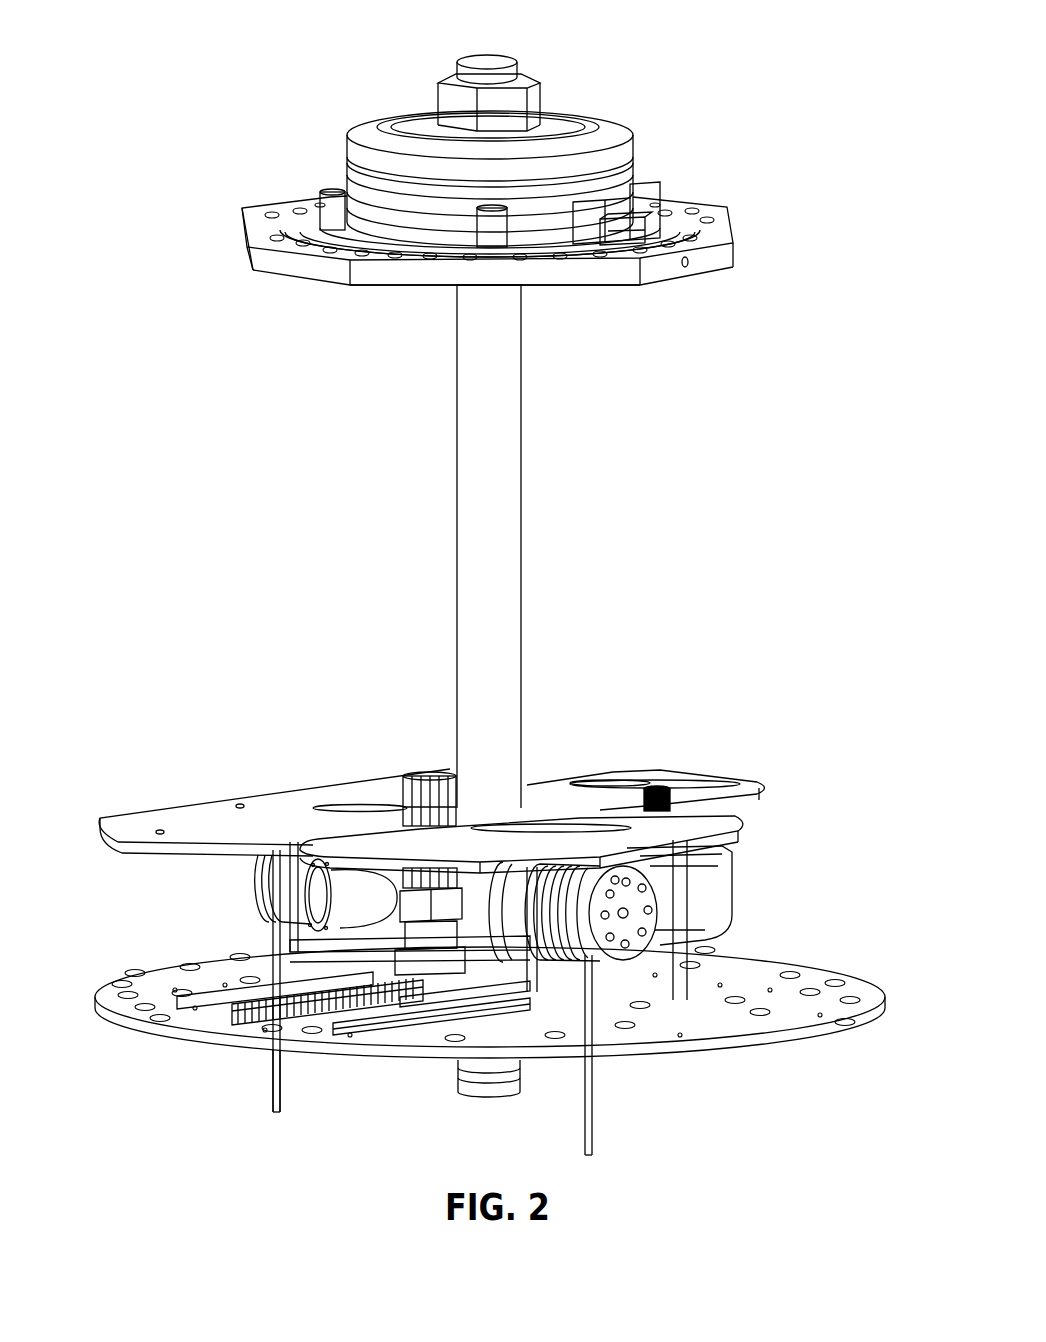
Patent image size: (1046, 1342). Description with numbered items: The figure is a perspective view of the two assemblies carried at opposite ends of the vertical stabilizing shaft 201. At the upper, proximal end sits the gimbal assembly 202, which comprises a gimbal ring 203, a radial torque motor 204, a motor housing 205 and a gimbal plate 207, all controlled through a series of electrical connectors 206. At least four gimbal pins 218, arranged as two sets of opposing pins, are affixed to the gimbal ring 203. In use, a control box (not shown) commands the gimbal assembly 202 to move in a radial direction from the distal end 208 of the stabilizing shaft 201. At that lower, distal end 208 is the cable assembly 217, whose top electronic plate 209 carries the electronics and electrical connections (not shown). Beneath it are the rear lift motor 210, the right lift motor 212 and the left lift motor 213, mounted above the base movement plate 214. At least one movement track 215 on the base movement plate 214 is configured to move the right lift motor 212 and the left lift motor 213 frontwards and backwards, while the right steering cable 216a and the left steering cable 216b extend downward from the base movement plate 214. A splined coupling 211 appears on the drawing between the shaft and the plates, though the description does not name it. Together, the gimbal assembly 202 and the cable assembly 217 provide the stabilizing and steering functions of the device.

The stabilizing shaft 201 is at (453, 480).
The gimbal assembly 202 is at (430, 46).
The gimbal ring 203 is at (287, 226).
The radial torque motor 204 is at (630, 162).
The motor housing 205 is at (662, 204).
The electrical connectors 206 is at (650, 236).
The gimbal plate 207 is at (278, 265).
The distal end of the stabilizing shaft 208 is at (543, 300).
The top electronic plate 209 is at (196, 808).
The rear lift motor 210 is at (760, 845).
The splined coupling 211 is at (410, 776).
The right lift motor 212 is at (324, 883).
The left lift motor 213 is at (648, 925).
The base movement plate 214 is at (176, 1045).
The movement track 215 is at (272, 993).
The right steering cable 216a is at (257, 1113).
The left steering cable 216b is at (604, 1154).
The cable assembly 217 is at (696, 745).
The gimbal pins 218 is at (686, 280).